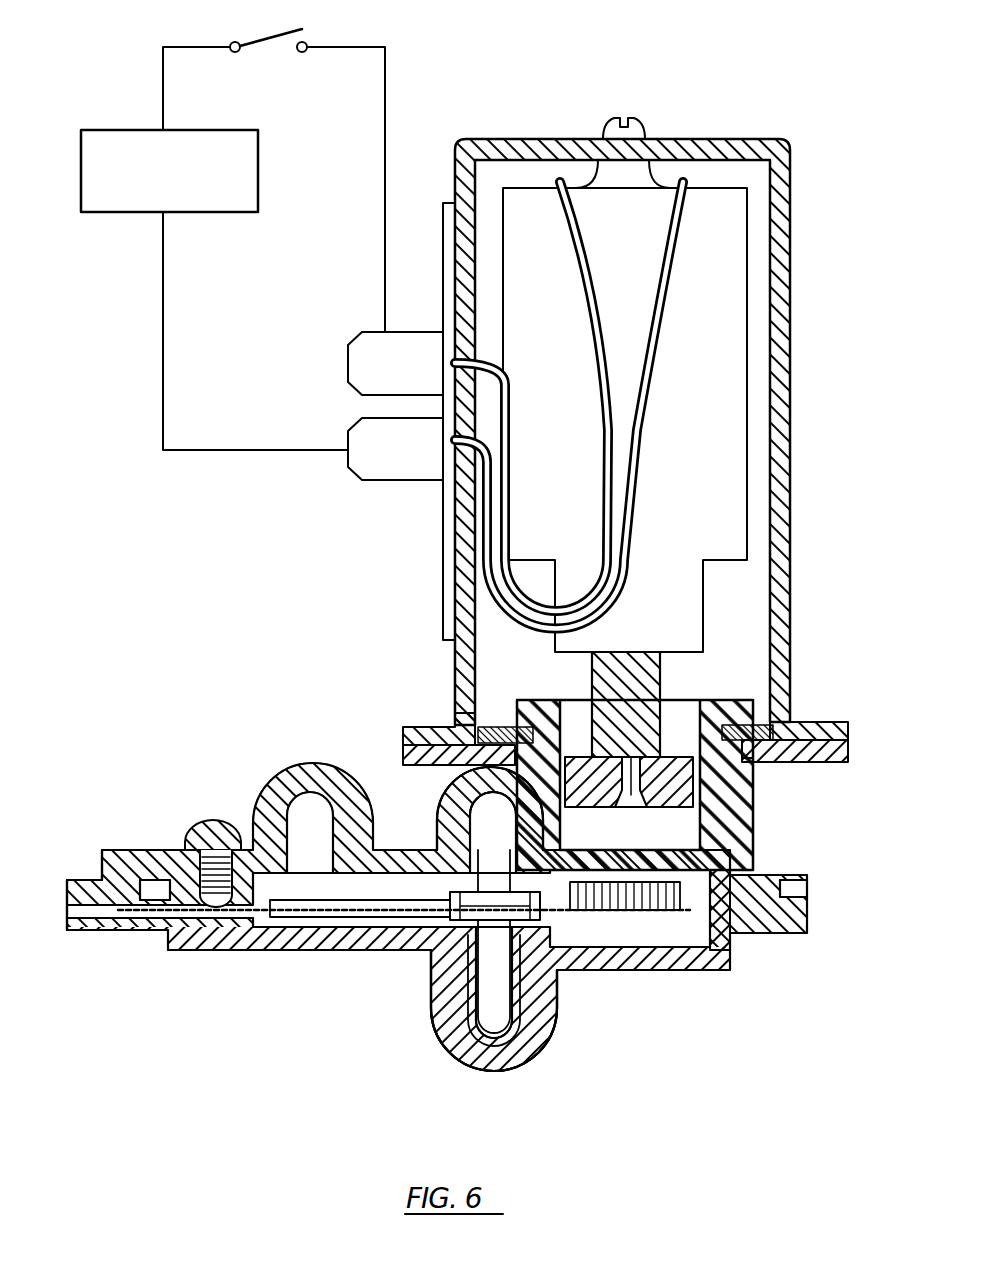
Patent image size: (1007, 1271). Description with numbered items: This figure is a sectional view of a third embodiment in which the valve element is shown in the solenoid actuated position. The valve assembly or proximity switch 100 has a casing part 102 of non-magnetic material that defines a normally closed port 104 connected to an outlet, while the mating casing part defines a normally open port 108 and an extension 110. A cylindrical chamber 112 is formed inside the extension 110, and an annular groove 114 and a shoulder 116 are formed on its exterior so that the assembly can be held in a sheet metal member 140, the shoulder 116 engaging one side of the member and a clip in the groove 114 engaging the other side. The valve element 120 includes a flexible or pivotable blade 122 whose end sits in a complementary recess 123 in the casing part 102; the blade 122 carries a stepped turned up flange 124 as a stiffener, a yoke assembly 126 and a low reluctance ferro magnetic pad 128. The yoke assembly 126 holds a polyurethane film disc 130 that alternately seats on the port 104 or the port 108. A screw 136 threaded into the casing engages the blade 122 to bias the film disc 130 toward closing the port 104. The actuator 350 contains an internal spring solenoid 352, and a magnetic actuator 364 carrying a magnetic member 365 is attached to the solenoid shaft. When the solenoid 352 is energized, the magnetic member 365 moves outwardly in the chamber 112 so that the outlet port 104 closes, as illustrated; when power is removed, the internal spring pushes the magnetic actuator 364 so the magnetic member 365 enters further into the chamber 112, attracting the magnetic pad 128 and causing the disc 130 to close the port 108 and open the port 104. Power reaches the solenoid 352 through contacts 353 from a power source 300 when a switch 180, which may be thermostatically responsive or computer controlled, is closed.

The valve assembly or proximity switch 100 is at (553, 1010).
The casing part 102 is at (293, 955).
The normally closed port 104 is at (433, 1000).
The normally open port 108 is at (447, 818).
The extension 110 is at (757, 860).
The cylindrical chamber 112 is at (629, 801).
The annular groove 114 is at (745, 722).
The shoulder 116 is at (757, 762).
The valve element 120 is at (197, 910).
The blade 122 is at (227, 905).
The recess 123 is at (130, 905).
The stepped turned up flange 124 is at (360, 910).
The yoke assembly 126 is at (458, 1045).
The low reluctance ferro magnetic pad 128 is at (657, 965).
The polyurethane film disc 130 is at (510, 1037).
The screw 136 is at (200, 828).
The sheet metal member 140 is at (843, 765).
The switch 180 is at (273, 37).
The power source 300 is at (258, 152).
The actuator 350 is at (791, 312).
The internal spring solenoid 352 is at (752, 375).
The contacts 353 is at (362, 432).
The magnetic actuator 364 is at (662, 686).
The magnetic member 365 is at (740, 937).